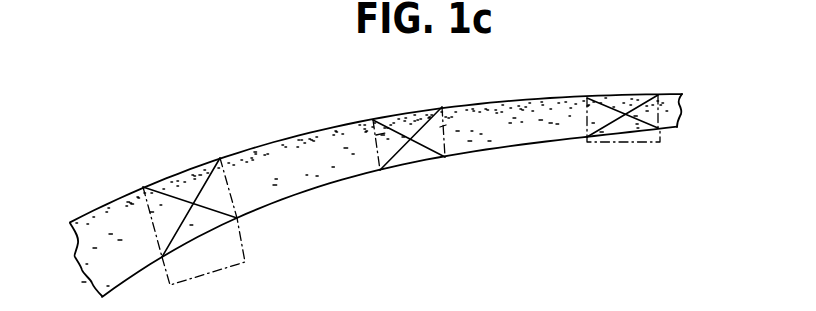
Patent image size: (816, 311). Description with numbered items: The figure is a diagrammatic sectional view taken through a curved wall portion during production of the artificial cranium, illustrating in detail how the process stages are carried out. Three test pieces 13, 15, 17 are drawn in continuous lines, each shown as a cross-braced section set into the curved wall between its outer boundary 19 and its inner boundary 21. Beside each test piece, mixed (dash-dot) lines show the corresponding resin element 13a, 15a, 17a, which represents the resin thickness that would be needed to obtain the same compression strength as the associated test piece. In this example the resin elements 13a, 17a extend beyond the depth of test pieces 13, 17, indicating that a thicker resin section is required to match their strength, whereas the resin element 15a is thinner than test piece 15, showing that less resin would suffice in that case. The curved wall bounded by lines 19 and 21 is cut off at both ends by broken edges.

The test piece 13 is at (203, 180).
The resin element 13a is at (213, 270).
The test piece 15 is at (425, 122).
The resin element 15a is at (414, 153).
The test piece 17 is at (630, 113).
The resin element 17a is at (615, 141).
The outer surface of curved wall 19 is at (96, 207).
The inner surface of curved wall 21 is at (307, 196).